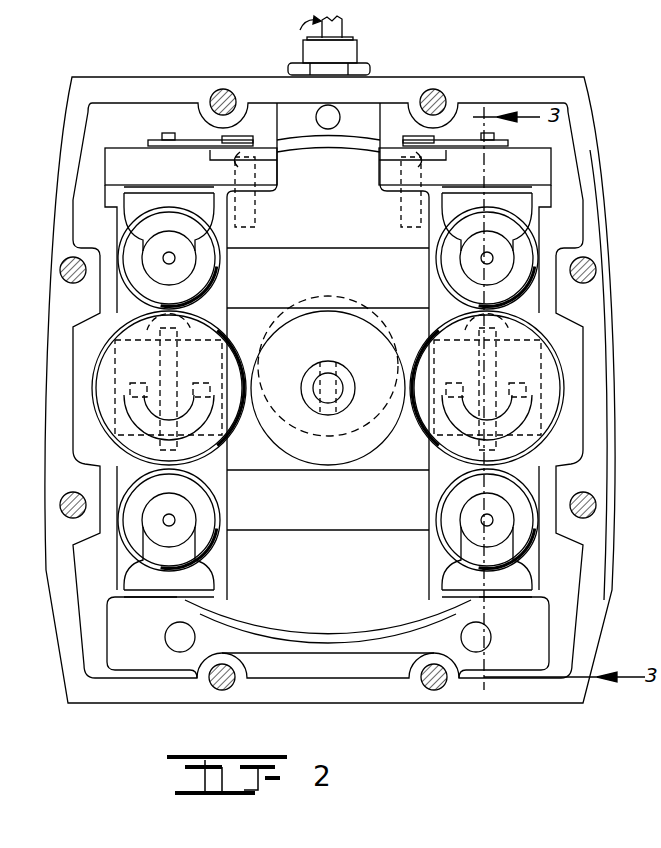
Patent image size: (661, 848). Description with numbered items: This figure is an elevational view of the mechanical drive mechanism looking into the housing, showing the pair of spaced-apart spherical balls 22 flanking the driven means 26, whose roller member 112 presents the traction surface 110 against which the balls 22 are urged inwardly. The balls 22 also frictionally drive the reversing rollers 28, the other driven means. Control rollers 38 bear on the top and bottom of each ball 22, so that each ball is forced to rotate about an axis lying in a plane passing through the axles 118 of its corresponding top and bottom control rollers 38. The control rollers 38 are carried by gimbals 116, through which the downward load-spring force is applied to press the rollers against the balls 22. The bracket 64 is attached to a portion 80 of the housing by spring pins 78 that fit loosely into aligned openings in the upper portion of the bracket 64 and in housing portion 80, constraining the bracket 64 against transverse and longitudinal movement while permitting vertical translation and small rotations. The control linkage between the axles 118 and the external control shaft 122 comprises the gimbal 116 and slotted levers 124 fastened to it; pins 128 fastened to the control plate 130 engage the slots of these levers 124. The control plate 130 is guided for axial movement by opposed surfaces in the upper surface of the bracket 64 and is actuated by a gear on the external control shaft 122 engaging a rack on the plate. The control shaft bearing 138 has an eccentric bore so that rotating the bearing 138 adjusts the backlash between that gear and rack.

The spherical ball 22 is at (94, 367).
The driven means 26 is at (320, 460).
The reversing rollers 28 is at (158, 450).
The control rollers 38 is at (218, 290).
The bracket 64 is at (133, 146).
The spring pins 78 is at (255, 212).
The housing portion 80 is at (318, 173).
The traction surface 110 is at (272, 446).
The roller member 112 is at (293, 463).
The gimbal 116 is at (193, 217).
The axles 118 is at (188, 267).
The external control shaft 122 is at (343, 22).
The slotted levers 124 is at (187, 141).
The pins 128 is at (227, 137).
The control plate 130 is at (240, 152).
The control shaft bearing 138 is at (357, 53).